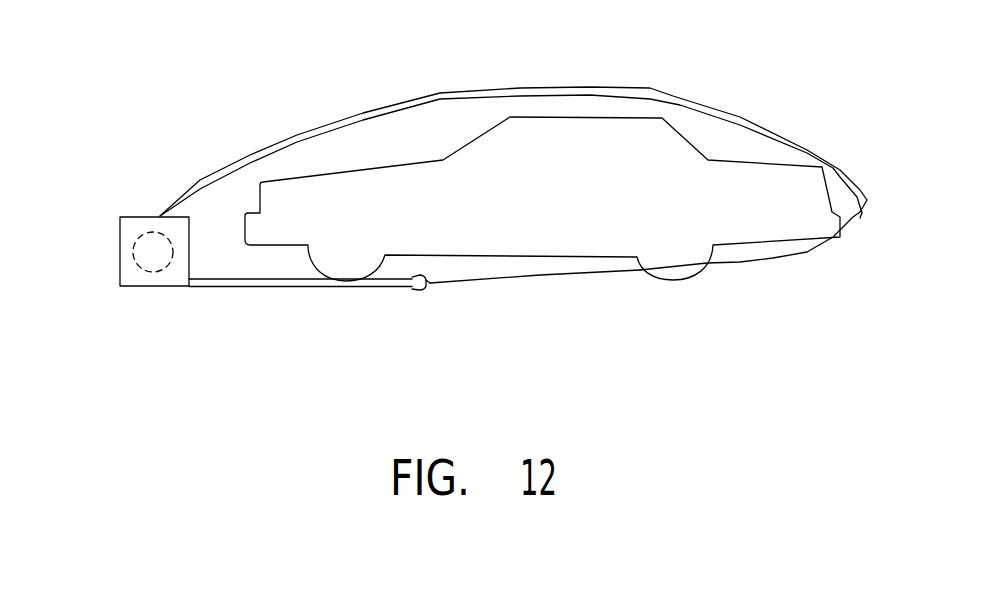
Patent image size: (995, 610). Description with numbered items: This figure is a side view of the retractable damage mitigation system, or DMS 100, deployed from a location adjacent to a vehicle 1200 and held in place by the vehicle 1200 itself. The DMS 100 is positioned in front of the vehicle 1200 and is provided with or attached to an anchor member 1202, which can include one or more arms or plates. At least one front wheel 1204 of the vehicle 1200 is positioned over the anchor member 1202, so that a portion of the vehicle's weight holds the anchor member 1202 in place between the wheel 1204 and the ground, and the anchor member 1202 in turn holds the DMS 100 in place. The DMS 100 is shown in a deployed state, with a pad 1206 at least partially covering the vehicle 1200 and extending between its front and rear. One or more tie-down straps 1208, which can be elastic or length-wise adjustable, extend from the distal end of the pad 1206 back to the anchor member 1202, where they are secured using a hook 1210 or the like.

The retractable damage mitigation system (DMS) 100 is at (131, 184).
The vehicle 1200 is at (578, 211).
The anchor member 1202 is at (267, 289).
The wheel 1204 is at (384, 271).
The pad 1206 is at (690, 103).
The tie-down straps 1208 is at (735, 259).
The hook 1210 is at (428, 297).